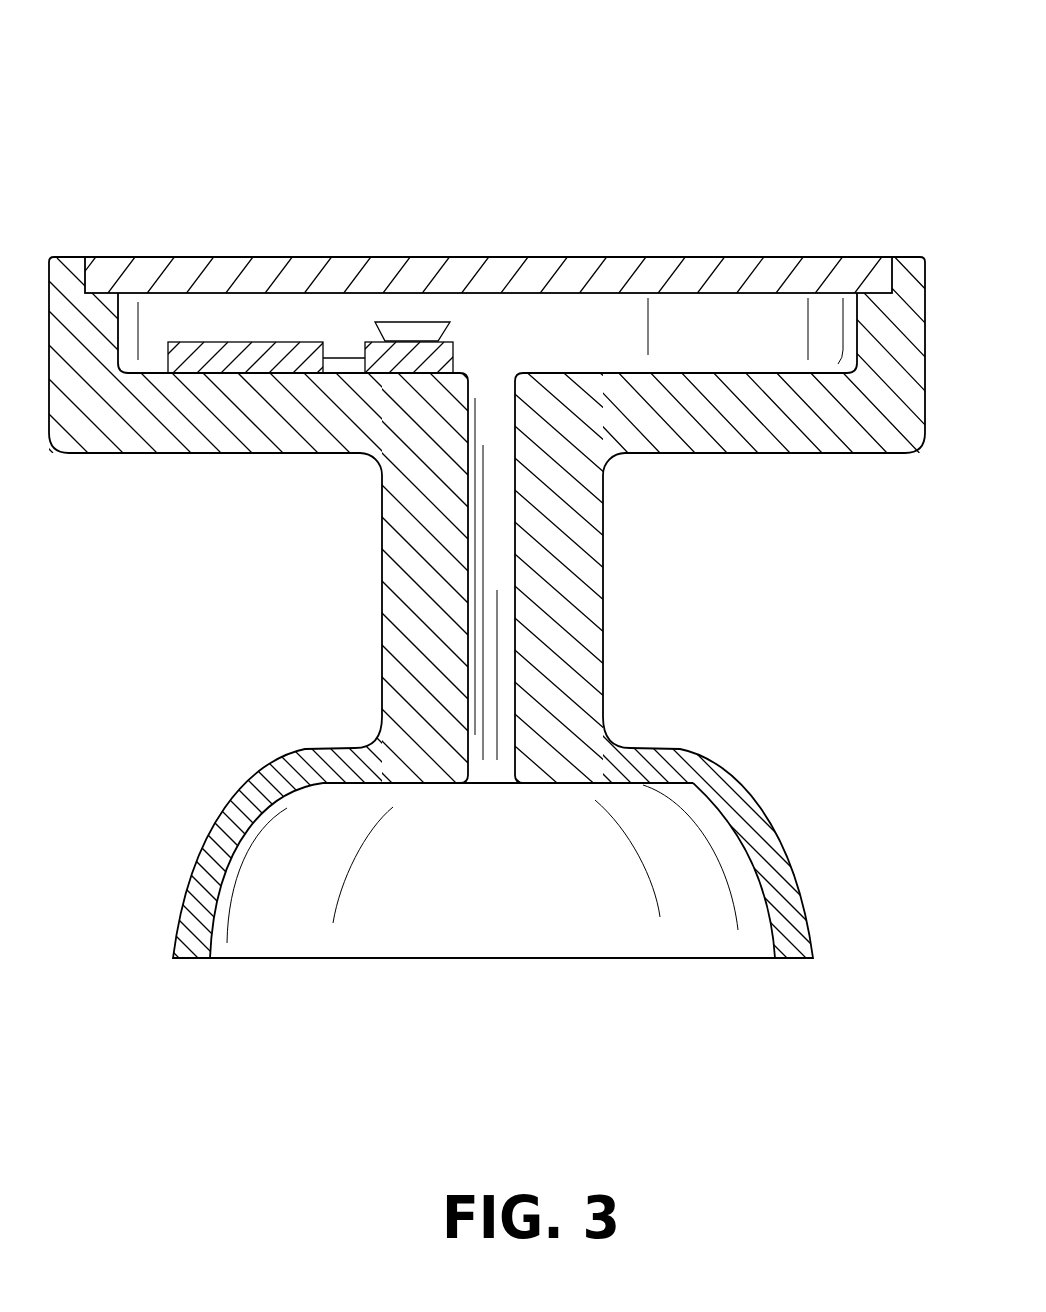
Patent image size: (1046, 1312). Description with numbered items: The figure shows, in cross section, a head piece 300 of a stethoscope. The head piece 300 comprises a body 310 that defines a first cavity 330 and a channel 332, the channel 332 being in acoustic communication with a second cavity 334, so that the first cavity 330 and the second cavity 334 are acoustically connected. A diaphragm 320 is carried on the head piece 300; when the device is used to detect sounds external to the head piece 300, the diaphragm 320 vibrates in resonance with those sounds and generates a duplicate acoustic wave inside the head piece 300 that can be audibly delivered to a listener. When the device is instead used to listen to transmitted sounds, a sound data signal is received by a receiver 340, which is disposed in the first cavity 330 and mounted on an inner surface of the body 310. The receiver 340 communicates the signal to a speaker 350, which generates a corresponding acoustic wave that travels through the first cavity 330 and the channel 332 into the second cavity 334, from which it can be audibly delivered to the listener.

The head piece 300 is at (523, 485).
The body 310 is at (857, 433).
The diaphragm 320 is at (672, 257).
The first cavity 330 is at (742, 350).
The channel 332 is at (493, 697).
The second cavity 334 is at (512, 898).
The receiver 340 is at (250, 342).
The speaker 350 is at (405, 323).